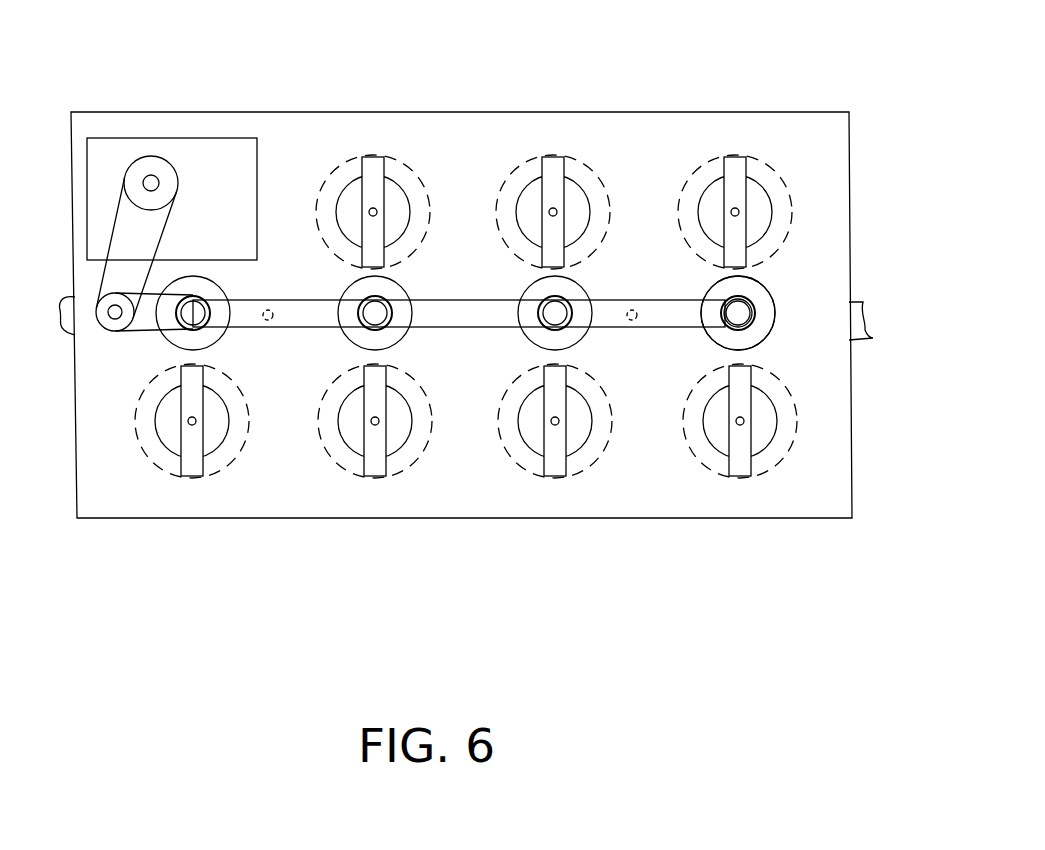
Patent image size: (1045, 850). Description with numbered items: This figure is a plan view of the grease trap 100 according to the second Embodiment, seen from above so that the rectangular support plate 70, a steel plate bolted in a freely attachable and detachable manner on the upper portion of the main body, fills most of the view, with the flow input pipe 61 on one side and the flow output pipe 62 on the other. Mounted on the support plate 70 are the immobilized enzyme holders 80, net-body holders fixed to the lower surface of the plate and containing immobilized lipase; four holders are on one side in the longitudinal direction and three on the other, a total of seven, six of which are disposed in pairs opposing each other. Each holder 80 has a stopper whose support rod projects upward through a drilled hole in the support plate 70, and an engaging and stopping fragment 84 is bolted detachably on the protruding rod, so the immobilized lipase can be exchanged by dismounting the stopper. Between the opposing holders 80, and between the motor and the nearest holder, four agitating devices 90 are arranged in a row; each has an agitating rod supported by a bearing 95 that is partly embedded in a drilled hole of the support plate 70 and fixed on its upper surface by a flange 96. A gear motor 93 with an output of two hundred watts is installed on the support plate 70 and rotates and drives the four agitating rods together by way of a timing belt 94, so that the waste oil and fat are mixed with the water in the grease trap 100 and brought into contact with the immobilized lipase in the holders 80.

The grease trap 100 is at (464, 82).
The support plate 70 is at (422, 137).
The immobilized enzyme holder 80 is at (354, 173).
The engaging and stopping fragment 84 is at (740, 173).
The agitating device 90 is at (180, 319).
The gear motor 93 is at (189, 163).
The timing belt 94 is at (298, 300).
The bearing 95 is at (753, 313).
The flange 96 is at (763, 332).
The flow input pipe 61 is at (65, 335).
The flow output pipe 62 is at (882, 334).